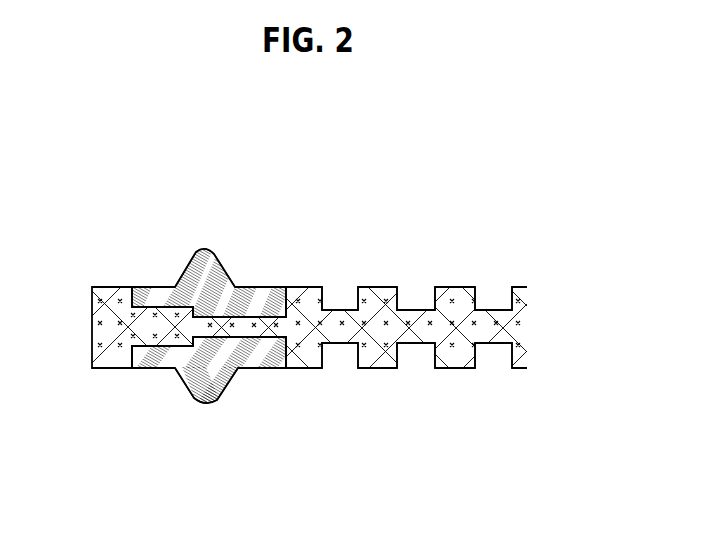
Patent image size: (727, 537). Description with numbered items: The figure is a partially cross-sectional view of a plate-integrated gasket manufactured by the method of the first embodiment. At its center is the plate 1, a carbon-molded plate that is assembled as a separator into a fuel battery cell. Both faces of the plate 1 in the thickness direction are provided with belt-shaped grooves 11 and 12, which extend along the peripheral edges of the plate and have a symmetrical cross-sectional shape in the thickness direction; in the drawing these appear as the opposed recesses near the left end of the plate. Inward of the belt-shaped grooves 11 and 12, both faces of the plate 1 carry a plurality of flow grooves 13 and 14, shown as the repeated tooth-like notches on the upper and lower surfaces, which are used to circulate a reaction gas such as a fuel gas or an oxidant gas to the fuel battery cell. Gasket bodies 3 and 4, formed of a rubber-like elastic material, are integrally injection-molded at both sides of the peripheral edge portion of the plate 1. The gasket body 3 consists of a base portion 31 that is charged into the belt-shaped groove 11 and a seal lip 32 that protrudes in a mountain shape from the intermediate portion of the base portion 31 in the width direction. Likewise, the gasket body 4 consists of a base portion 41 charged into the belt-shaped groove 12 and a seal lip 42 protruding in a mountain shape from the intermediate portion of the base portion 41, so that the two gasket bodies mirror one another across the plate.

The plate 1 is at (461, 282).
The belt-shaped groove 11 is at (270, 292).
The belt-shaped groove 12 is at (282, 340).
The flow grooves 13 is at (414, 302).
The flow grooves 14 is at (408, 348).
The gasket body 3 is at (172, 253).
The base portion 31 is at (246, 292).
The seal lip 32 is at (221, 258).
The gasket body 4 is at (185, 406).
The base portion 41 is at (252, 362).
The seal lip 42 is at (211, 404).